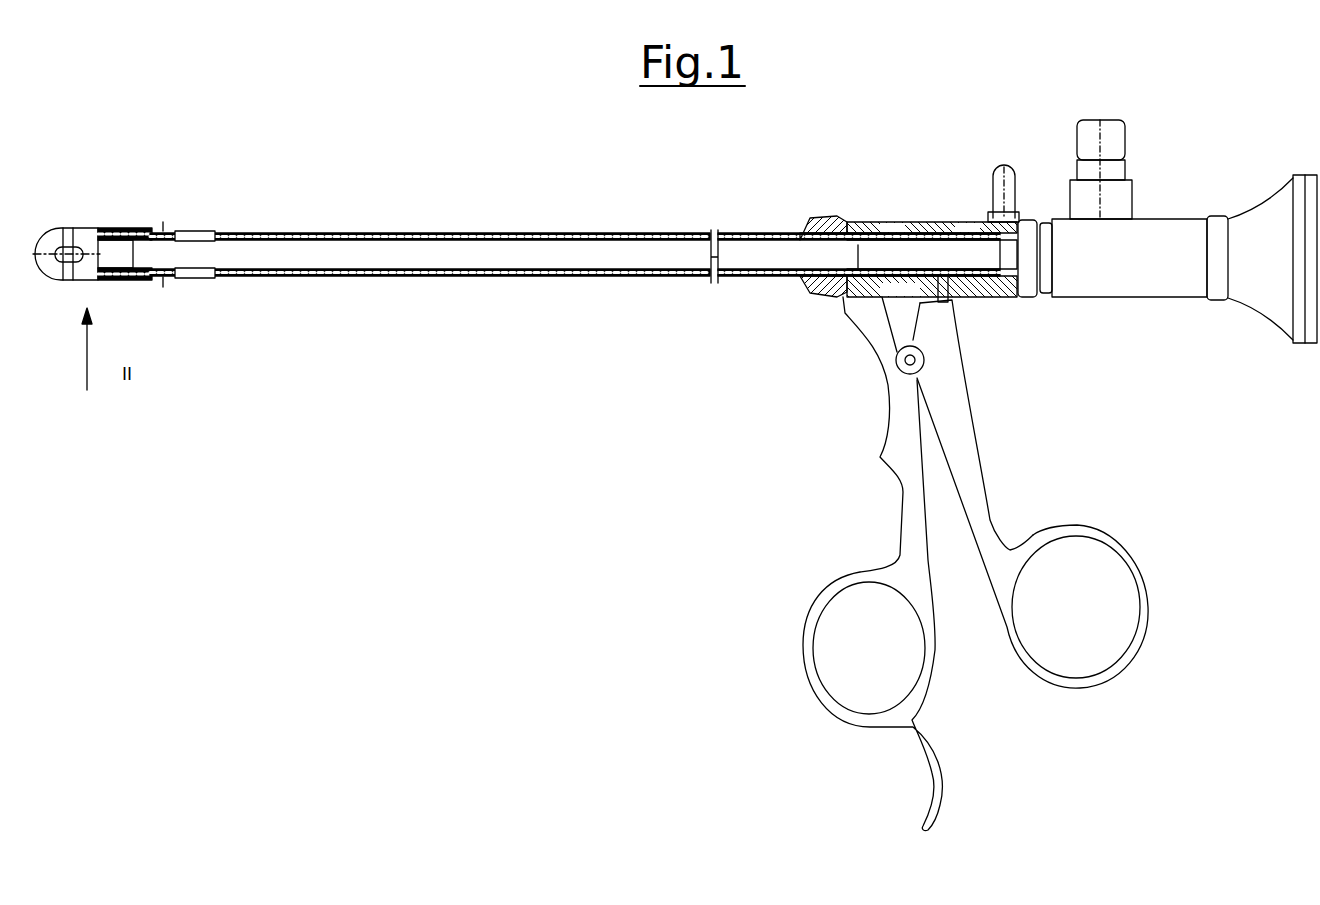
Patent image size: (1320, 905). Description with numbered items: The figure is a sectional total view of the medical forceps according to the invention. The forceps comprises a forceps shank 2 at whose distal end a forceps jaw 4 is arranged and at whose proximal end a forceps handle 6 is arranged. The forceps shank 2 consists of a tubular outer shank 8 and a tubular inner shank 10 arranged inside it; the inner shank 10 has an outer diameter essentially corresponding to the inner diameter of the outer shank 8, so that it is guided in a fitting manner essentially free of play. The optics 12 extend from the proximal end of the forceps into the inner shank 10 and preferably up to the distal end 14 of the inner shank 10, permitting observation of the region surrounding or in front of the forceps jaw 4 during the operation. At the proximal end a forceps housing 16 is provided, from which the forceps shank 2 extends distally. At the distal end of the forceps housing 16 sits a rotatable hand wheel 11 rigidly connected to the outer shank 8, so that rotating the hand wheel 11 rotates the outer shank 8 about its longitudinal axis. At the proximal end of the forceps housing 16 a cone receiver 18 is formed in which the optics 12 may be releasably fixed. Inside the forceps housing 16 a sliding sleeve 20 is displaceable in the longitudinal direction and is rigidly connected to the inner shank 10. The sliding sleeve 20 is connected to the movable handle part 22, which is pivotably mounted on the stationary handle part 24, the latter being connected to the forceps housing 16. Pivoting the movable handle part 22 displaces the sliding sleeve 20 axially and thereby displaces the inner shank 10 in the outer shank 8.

The forceps shank 2 is at (548, 232).
The forceps jaw 4 is at (71, 228).
The forceps handle 6 is at (990, 680).
The outer shank 8 is at (680, 232).
The inner shank 10 is at (620, 278).
The hand wheel 11 is at (812, 215).
The optics 12 is at (1160, 232).
The distal end of the inner shank 14 is at (117, 228).
The forceps housing 16 is at (897, 220).
The cone receiver 18 is at (1033, 220).
The sliding sleeve 20 is at (948, 220).
The movable handle part 22 is at (975, 500).
The stationary handle part 24 is at (900, 483).